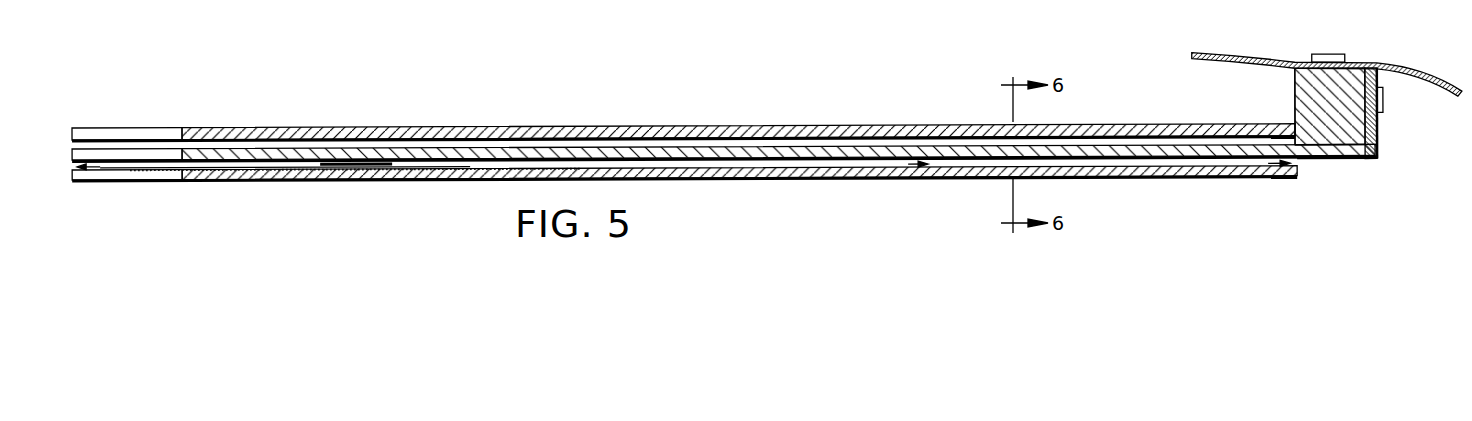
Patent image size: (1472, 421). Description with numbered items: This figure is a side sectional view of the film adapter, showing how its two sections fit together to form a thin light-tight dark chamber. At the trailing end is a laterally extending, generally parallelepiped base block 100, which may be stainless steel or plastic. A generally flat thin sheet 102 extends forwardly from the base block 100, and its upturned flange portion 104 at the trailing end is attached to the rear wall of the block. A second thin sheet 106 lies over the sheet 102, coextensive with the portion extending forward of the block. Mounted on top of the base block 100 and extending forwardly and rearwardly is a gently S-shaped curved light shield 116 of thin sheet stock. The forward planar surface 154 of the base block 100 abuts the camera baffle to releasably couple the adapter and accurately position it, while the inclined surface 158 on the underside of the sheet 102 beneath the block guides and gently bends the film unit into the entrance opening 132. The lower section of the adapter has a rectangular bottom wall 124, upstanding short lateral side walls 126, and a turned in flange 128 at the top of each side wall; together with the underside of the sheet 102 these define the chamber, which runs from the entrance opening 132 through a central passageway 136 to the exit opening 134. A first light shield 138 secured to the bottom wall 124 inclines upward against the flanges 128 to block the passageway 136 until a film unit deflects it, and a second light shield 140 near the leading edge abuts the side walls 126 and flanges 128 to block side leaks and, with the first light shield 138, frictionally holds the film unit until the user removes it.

The base block 100 is at (1352, 155).
The sheet 102 is at (1230, 150).
The upturned flange portion 104 is at (1376, 128).
The second thin sheet 106 is at (1215, 128).
The light shield 116 is at (1417, 74).
The bottom wall 124 is at (1163, 173).
The lateral side walls 126 is at (1113, 161).
The turned in flange 128 is at (1127, 138).
The entrance opening 132 is at (1300, 161).
The exit opening 134 is at (68, 174).
The central passageway 136 is at (928, 165).
The first light shield 138 is at (423, 172).
The second light shield 140 is at (207, 178).
The forward planar surface 154 is at (1295, 79).
The inclined surface 158 is at (1335, 158).